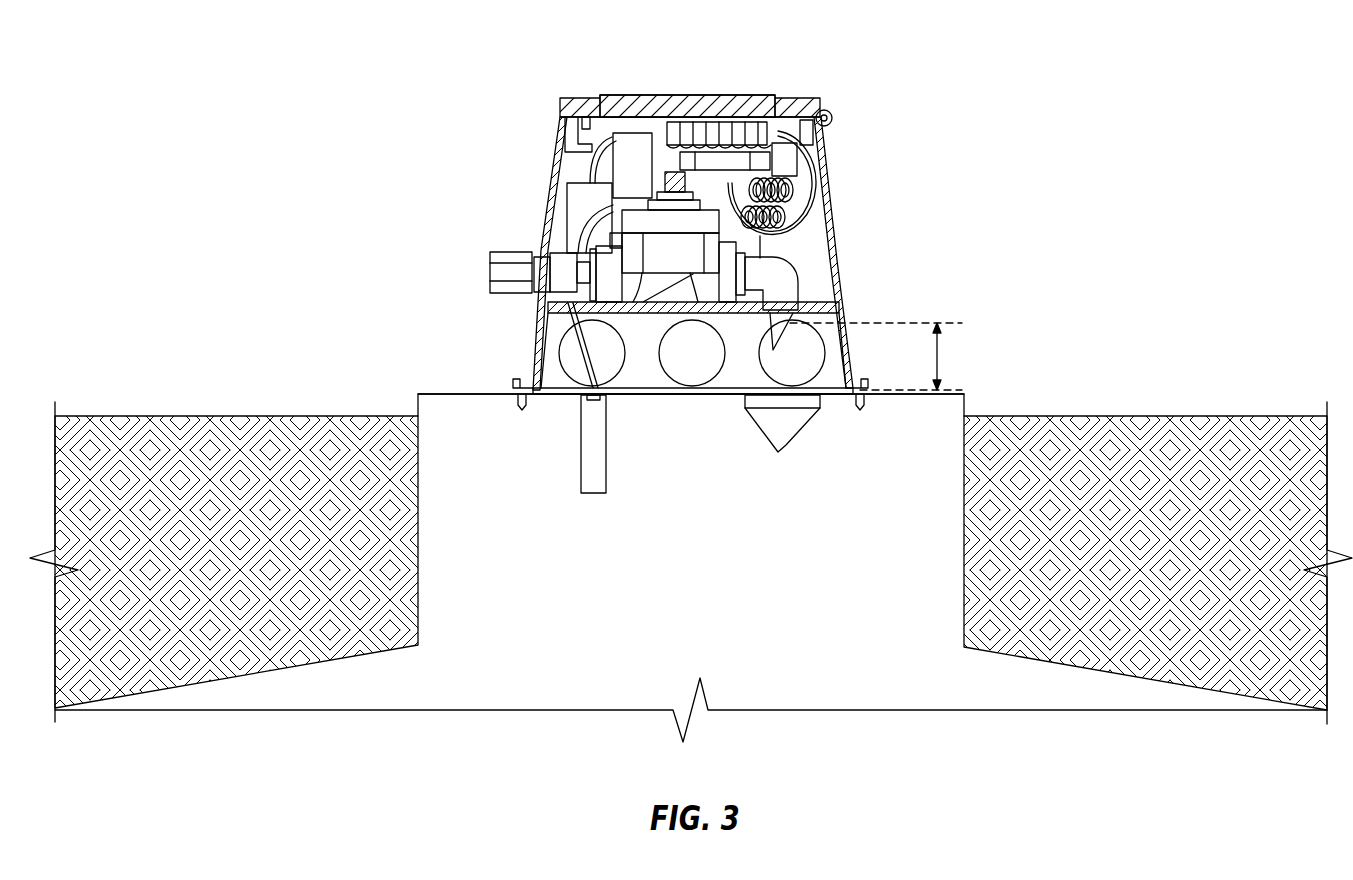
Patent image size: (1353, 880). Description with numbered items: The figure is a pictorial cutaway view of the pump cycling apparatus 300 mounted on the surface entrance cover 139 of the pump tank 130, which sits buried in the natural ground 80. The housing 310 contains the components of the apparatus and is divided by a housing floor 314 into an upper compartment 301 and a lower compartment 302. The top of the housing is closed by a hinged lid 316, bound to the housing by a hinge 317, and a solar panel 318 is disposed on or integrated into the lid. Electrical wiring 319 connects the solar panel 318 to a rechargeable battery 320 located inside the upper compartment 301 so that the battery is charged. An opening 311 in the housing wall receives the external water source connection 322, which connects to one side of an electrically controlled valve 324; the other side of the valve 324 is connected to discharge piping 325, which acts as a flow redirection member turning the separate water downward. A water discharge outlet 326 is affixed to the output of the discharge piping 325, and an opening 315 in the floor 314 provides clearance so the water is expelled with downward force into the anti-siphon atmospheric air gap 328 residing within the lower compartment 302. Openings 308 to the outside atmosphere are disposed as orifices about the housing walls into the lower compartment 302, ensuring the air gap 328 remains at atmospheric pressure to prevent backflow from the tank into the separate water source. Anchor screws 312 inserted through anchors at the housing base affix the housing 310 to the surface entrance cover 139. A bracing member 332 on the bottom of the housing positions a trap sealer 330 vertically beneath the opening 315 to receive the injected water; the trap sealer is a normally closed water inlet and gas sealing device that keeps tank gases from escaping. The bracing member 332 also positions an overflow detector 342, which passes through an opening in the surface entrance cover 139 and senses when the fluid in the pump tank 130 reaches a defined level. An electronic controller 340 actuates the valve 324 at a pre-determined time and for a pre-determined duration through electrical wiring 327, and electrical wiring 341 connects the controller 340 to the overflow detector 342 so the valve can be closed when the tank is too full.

The pump cycling apparatus 300 is at (716, 261).
The hinged lid 316 is at (592, 97).
The solar panel 318 is at (695, 95).
The electronic controller 340 is at (742, 122).
The hinge 317 is at (834, 114).
The electrical wiring 327 is at (818, 152).
The housing 310 is at (838, 182).
The upper compartment 301 is at (818, 214).
The rechargeable battery 320 is at (770, 242).
The discharge piping 325 is at (804, 282).
The opening 315 is at (804, 312).
The electrical wiring 319 is at (588, 160).
The electrically controlled valve 324 is at (620, 220).
The opening 311 is at (547, 262).
The external water source connection 322 is at (489, 272).
The lower compartment 302 is at (550, 348).
The anchor screws 312 is at (521, 387).
The surface entrance cover 139 is at (437, 394).
The housing floor 314 is at (842, 322).
The openings to the outside atmosphere 308 is at (825, 353).
The anti-siphon atmospheric air gap 328 is at (953, 345).
The electrical wiring 341 is at (582, 360).
The water discharge outlet 326 is at (768, 344).
The bracing member 332 is at (837, 395).
The trap sealer 330 is at (798, 440).
The overflow detector 342 is at (578, 462).
The natural ground 80 is at (253, 550).
The pump tank 130 is at (718, 618).